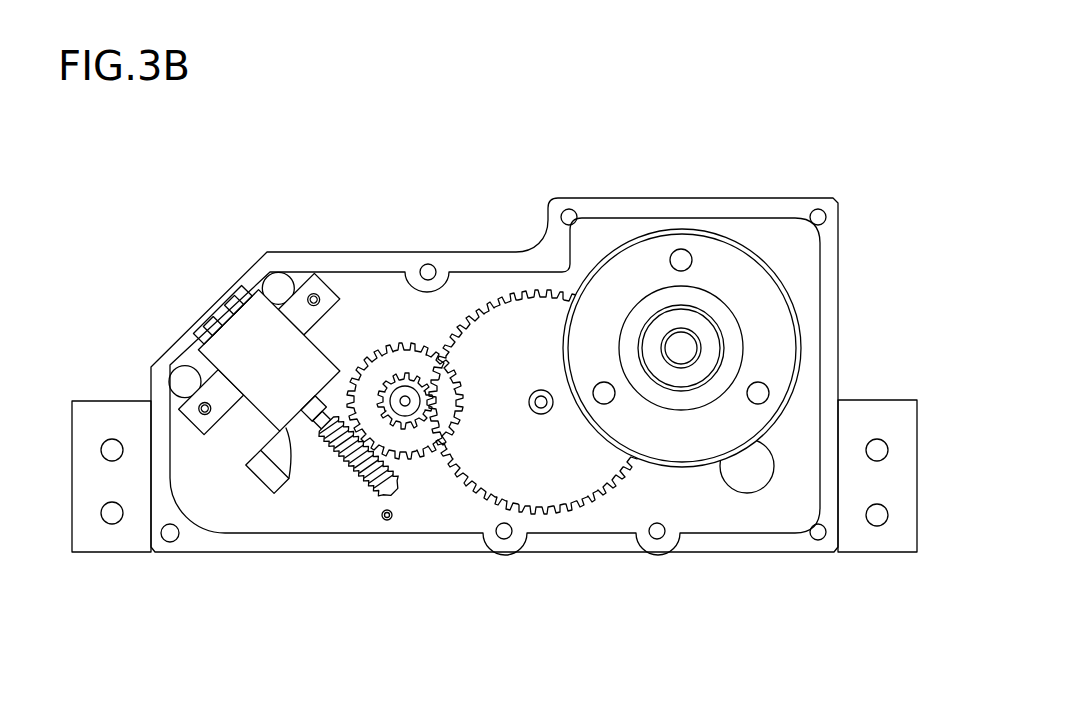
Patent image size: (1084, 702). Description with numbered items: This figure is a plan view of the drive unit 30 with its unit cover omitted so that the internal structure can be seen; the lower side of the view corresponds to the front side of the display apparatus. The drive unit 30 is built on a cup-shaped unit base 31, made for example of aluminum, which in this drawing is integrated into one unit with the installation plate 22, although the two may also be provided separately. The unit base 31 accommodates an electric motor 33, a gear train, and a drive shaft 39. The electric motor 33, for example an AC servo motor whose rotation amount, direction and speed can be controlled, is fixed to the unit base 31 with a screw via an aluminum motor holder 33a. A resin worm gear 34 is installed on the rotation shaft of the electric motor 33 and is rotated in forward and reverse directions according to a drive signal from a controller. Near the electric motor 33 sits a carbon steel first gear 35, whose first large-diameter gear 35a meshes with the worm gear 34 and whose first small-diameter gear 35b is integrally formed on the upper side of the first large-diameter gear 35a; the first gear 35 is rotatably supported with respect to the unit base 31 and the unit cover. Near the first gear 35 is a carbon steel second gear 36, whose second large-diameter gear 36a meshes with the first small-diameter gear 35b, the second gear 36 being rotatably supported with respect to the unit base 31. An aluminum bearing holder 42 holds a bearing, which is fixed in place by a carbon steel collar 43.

The installation plate 22 is at (897, 410).
The drive unit 30 is at (482, 400).
The unit base 31 is at (231, 543).
The electric motor 33 is at (275, 386).
The motor holder 33a is at (222, 380).
The worm gear 34 is at (337, 463).
The first gear 35 is at (351, 307).
The first large-diameter gear 35a is at (360, 360).
The first small-diameter gear 35b is at (393, 378).
The second gear 36 is at (541, 455).
The second large-diameter gear 36a is at (549, 458).
The drive shaft 39 is at (681, 348).
The bearing holder 42 is at (618, 290).
The collar 43 is at (686, 321).